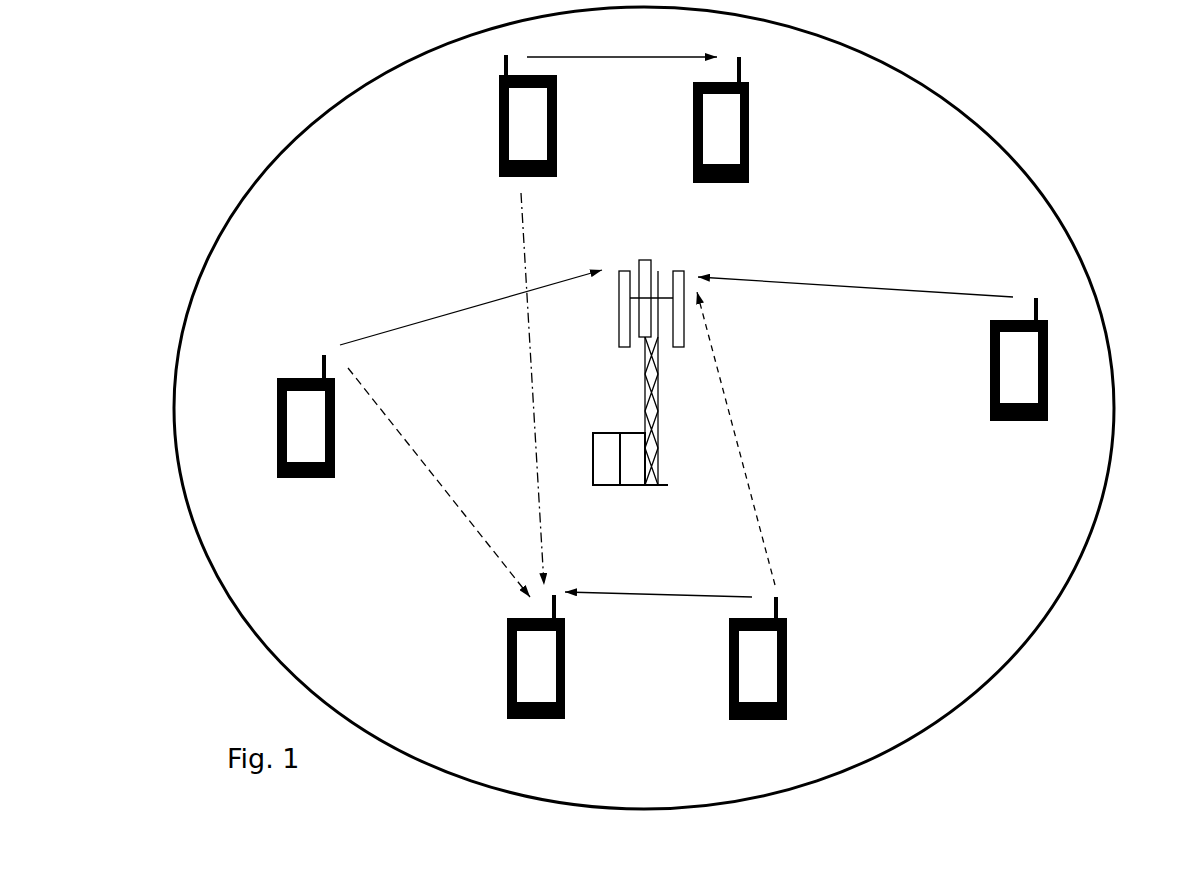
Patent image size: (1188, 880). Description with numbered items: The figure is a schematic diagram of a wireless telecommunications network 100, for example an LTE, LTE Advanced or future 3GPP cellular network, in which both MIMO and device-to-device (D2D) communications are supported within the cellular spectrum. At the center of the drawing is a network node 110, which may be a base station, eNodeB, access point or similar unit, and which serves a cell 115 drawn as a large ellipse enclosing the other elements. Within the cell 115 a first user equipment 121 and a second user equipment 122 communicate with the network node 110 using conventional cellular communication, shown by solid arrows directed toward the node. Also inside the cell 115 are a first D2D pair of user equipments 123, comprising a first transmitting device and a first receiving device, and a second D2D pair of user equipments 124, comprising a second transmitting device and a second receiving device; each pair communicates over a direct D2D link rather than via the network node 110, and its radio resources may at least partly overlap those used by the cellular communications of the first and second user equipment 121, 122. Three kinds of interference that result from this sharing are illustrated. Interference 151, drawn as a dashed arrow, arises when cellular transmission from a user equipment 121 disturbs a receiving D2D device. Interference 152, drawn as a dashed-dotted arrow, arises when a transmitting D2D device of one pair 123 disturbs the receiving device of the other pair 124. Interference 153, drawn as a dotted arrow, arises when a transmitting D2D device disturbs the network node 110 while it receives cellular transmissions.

The wireless telecommunications network 100 is at (1033, 705).
The network node 110 is at (645, 382).
The cell 115 is at (260, 645).
The first user equipment 121 is at (277, 396).
The second user equipment 122 is at (990, 339).
The first D2D pair of user equipments 123 is at (693, 112).
The second D2D pair of user equipments 124 is at (729, 652).
The interference 151 is at (418, 452).
The interference 152 is at (530, 352).
The interference 153 is at (743, 475).